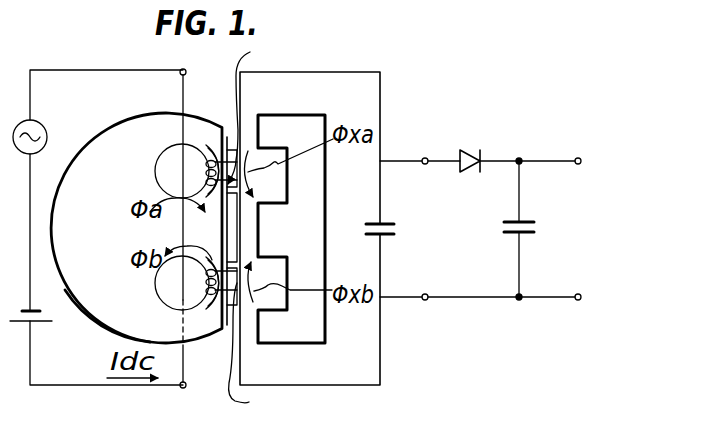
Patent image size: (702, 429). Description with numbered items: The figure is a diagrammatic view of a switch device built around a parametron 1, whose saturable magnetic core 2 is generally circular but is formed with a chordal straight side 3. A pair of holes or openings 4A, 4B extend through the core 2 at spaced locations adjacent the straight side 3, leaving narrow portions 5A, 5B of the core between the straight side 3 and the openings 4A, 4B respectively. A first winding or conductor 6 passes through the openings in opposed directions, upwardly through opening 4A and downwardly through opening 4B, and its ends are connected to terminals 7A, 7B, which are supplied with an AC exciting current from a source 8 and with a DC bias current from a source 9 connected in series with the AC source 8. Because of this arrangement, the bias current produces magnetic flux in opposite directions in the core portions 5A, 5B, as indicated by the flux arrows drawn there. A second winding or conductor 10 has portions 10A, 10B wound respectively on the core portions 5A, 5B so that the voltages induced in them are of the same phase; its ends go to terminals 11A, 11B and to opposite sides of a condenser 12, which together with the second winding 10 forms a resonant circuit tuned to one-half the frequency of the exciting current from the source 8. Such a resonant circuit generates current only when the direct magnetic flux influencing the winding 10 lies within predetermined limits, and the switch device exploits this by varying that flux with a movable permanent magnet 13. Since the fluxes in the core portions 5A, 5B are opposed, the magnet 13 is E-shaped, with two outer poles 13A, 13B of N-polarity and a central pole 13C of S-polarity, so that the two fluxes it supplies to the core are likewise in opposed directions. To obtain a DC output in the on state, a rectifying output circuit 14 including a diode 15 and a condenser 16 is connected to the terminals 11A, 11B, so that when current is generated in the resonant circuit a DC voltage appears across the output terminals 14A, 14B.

The parametron 1 is at (90, 136).
The saturable magnetic core 2 is at (92, 326).
The chordal straight side 3 is at (226, 217).
The hole or opening 4A is at (155, 165).
The hole or opening 4B is at (155, 283).
The narrow portion of the core 5A is at (247, 112).
The narrow portion of the core 5B is at (248, 344).
The first winding or conductor 6 is at (171, 98).
The terminal 7A is at (185, 69).
The terminal 7B is at (185, 388).
The AC source 8 is at (42, 122).
The DC source 9 is at (38, 322).
The second winding or conductor 10 is at (231, 175).
The portion of second winding 10A is at (210, 147).
The portion of second winding 10B is at (208, 304).
The terminal 11A is at (425, 157).
The terminal 11B is at (428, 301).
The condenser 12 is at (398, 225).
The movable permanent magnet 13 is at (312, 182).
The outer pole 13A is at (280, 127).
The outer pole 13B is at (290, 325).
The central pole 13C is at (290, 240).
The rectifying output circuit 14 is at (505, 140).
The output terminal 14A is at (579, 158).
The output terminal 14B is at (577, 301).
The diode 15 is at (468, 150).
The condenser 16 is at (533, 231).